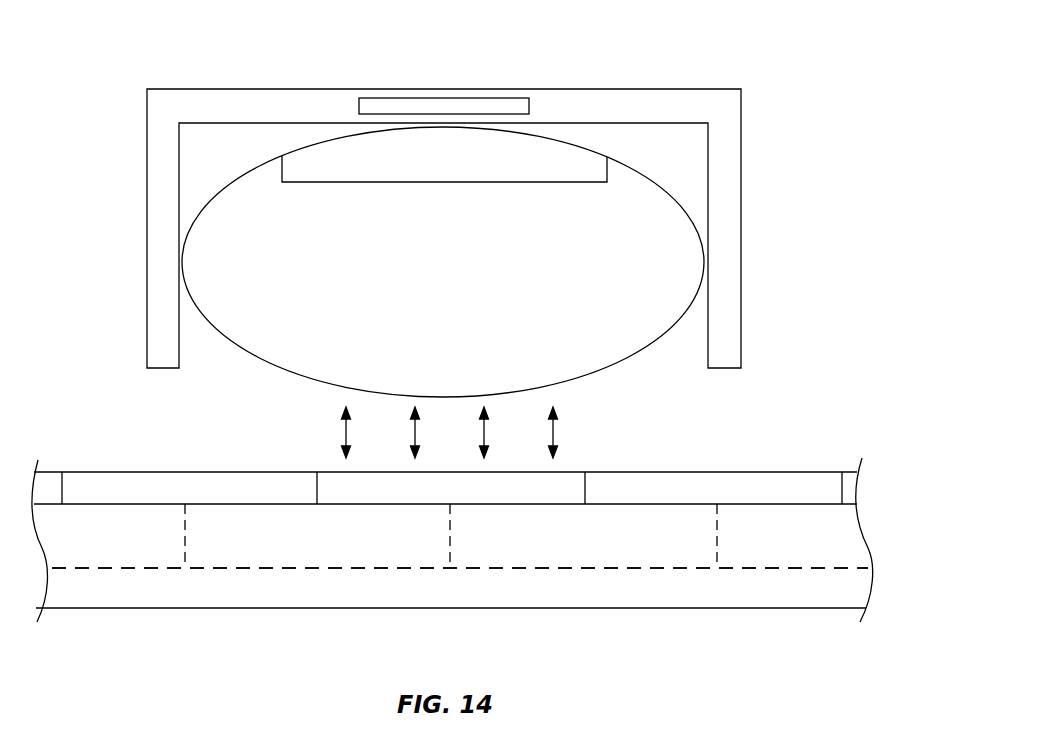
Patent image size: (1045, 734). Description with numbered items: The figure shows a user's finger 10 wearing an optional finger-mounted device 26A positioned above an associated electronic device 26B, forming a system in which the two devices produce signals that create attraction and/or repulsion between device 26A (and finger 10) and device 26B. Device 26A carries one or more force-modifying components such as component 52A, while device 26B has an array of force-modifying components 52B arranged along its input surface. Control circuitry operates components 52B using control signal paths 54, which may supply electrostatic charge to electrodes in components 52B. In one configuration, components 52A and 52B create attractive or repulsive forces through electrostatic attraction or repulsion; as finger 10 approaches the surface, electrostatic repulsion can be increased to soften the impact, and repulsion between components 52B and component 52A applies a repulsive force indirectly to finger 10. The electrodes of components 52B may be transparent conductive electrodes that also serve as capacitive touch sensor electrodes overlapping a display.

The finger 10 is at (637, 365).
The device 26A is at (728, 177).
The device 26B is at (888, 466).
The force-modifying component 52A is at (450, 107).
The force-modifying components 52B is at (175, 482).
The control signal paths 54 is at (128, 569).